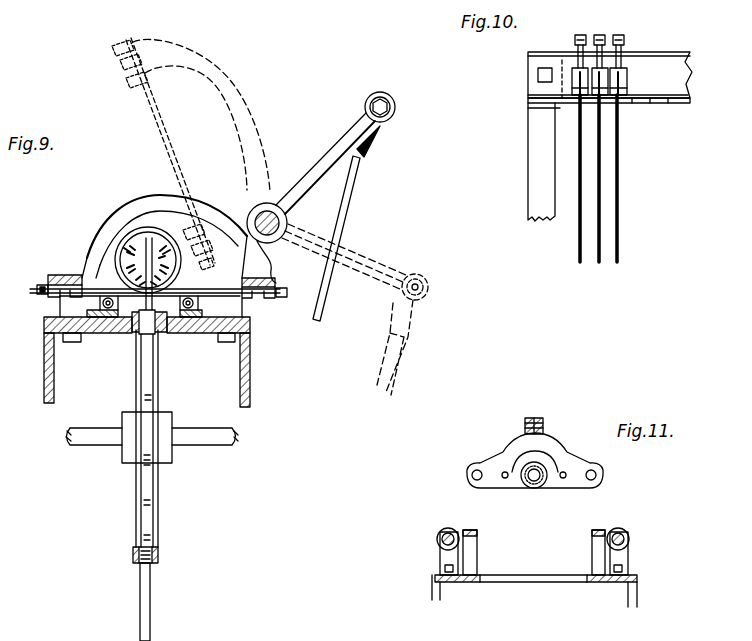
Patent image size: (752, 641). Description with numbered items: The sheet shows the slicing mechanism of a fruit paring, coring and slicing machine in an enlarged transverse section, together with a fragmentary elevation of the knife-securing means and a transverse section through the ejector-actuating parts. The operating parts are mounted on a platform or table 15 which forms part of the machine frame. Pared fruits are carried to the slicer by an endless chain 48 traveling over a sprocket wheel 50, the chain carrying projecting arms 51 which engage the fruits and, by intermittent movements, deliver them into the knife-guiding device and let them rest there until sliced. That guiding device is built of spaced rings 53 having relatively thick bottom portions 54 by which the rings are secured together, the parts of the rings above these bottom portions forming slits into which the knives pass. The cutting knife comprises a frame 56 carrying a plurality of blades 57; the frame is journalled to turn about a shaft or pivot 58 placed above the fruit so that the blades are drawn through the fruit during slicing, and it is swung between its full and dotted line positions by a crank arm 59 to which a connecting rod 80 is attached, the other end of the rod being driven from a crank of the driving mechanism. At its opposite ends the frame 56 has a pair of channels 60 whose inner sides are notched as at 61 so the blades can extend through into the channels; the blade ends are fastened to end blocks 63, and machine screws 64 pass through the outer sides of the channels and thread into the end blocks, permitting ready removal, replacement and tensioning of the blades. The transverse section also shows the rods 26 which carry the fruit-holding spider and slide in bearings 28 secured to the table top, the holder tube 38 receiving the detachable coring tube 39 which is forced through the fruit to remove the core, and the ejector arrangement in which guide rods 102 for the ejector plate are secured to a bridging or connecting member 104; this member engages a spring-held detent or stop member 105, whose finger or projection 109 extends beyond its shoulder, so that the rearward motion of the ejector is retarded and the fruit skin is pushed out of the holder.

In FIG. 9, the platform or table 15 is at (147, 362).
In FIG. 11, the rods 26 is at (437, 540).
In FIG. 11, the bearings 28 is at (440, 550).
In FIG. 11, the holder tube 38 is at (543, 488).
In FIG. 11, the coring tube 39 is at (528, 488).
In FIG. 9, the endless chain 48 is at (158, 555).
In FIG. 9, the sprocket wheel 50 is at (147, 483).
In FIG. 9, the projecting parts or arms 51 is at (150, 590).
In FIG. 9, the spaced rings 53 is at (110, 257).
In FIG. 9, the bottom portions 54 is at (127, 325).
In FIG. 9, the frame 56 is at (128, 196).
In FIG. 10, the frame 56 is at (527, 146).
In FIG. 9, the blades 57 is at (140, 125).
In FIG. 10, the blades 57 is at (582, 172).
In FIG. 9, the shaft or pivot 58 is at (245, 193).
In FIG. 9, the crank arm 59 is at (332, 143).
In FIG. 9, the channels 60 is at (50, 277).
In FIG. 10, the channels 60 is at (610, 75).
In FIG. 10, the notches 61 is at (637, 105).
In FIG. 9, the end blocks 63 is at (67, 297).
In FIG. 10, the end blocks 63 is at (605, 73).
In FIG. 9, the machine screws 64 is at (38, 290).
In FIG. 10, the machine screws 64 is at (605, 35).
In FIG. 9, the connecting rod 80 is at (355, 188).
In FIG. 11, the rods 102 is at (540, 462).
In FIG. 11, the bridging or connecting member 104 is at (507, 440).
In FIG. 11, the detent or stop member 105 is at (545, 430).
In FIG. 11, the finger or projection 109 is at (540, 417).